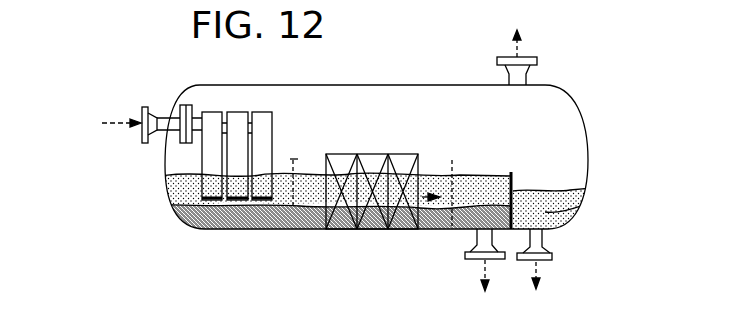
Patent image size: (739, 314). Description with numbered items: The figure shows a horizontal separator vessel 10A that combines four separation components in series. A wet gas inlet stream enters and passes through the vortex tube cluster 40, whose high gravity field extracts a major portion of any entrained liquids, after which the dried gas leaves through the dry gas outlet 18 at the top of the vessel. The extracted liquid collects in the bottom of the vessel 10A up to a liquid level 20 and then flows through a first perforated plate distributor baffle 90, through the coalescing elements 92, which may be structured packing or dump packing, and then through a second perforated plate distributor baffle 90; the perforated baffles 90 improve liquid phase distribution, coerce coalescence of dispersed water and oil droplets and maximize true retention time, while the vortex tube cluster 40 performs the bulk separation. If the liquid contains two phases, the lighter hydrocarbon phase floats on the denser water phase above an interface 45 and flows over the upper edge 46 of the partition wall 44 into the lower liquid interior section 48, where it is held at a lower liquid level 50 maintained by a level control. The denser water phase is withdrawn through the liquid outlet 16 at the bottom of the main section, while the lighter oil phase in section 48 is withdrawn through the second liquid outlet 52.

The horizontal separator vessel 10A is at (322, 85).
The dry gas outlet 18 is at (520, 57).
The vortex tube cluster 40 is at (292, 132).
The interface 45 is at (255, 229).
The coalescing elements 92 is at (380, 154).
The perforated plate distributor baffles 90 is at (426, 229).
The liquid level 20 is at (498, 176).
The partition wall 44 is at (482, 198).
The upper edge 46 is at (513, 170).
The lower liquid level 50 is at (545, 184).
The lower liquid interior section 48 is at (577, 210).
The liquid outlet 16 is at (480, 257).
The second liquid outlet 52 is at (545, 237).